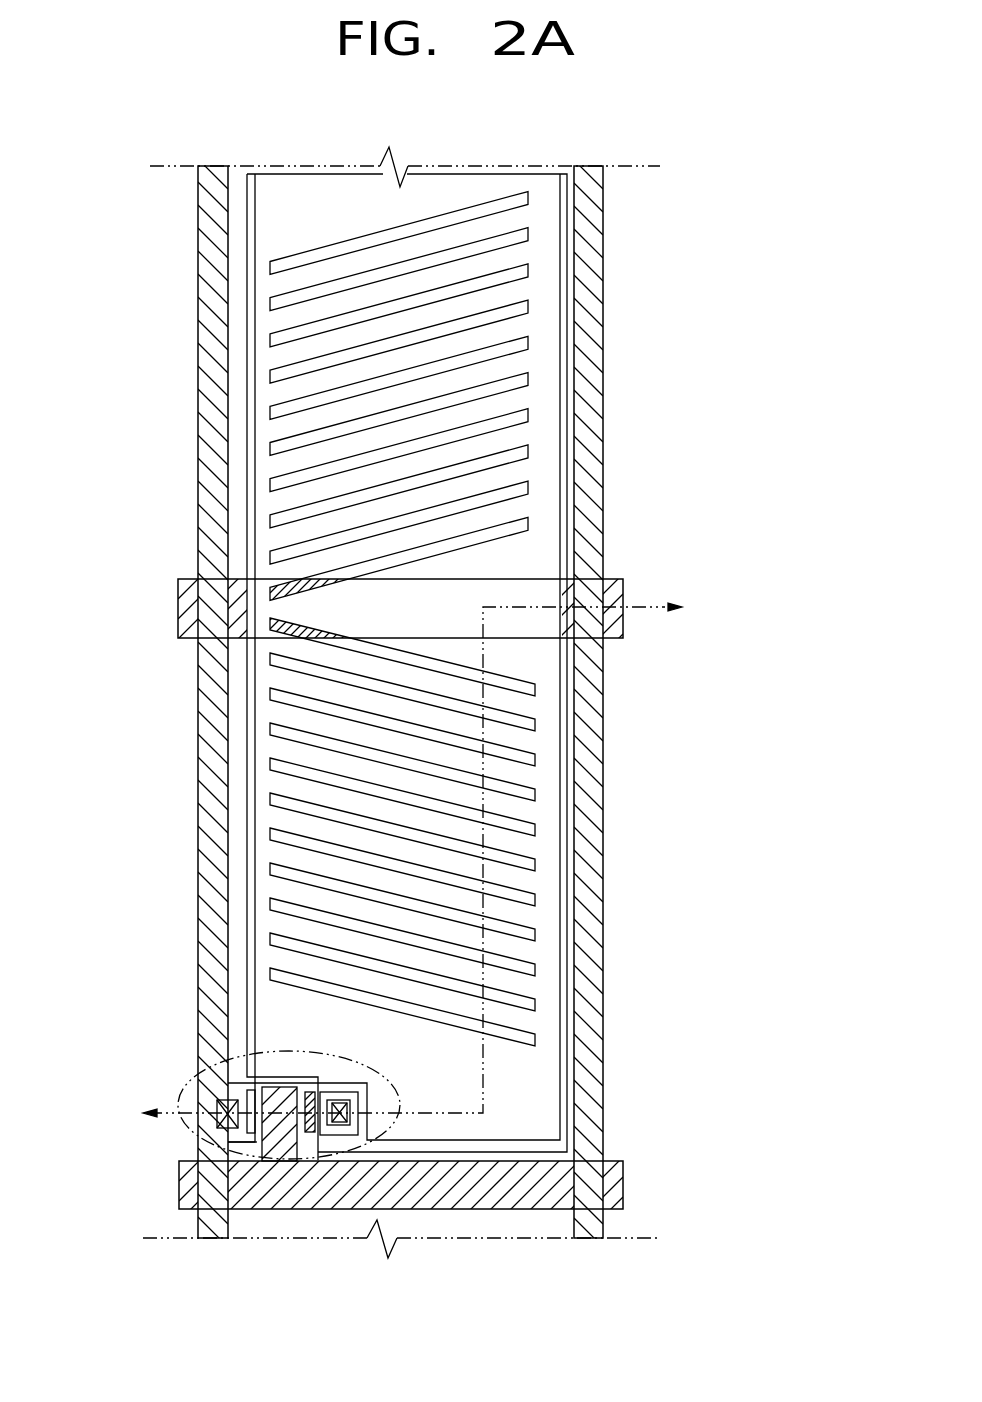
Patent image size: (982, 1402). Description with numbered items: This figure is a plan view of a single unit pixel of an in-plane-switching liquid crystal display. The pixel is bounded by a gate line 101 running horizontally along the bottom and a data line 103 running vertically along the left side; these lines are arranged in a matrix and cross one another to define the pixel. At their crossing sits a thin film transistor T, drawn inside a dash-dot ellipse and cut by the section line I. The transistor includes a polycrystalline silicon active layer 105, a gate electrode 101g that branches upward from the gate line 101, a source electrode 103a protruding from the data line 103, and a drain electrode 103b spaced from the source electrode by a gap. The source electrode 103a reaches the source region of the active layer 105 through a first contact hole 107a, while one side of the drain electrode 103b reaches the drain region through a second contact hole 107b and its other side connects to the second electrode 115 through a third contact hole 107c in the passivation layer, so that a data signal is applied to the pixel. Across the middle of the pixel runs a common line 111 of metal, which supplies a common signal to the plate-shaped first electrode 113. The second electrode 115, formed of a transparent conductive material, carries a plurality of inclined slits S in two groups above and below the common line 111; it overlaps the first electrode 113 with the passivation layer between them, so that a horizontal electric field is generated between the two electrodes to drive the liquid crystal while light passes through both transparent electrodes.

The gate line 101 is at (562, 1209).
The gate electrode 101g is at (282, 1173).
The data line 103 is at (215, 344).
The source electrode 103a is at (243, 1160).
The drain electrode 103b is at (313, 1150).
The active layer 105 is at (243, 1153).
The first contact hole 107a is at (222, 1118).
The second contact hole 107b is at (347, 1128).
The third contact hole 107c is at (352, 1118).
The common line 111 is at (577, 575).
The first electrode 113 is at (565, 1061).
The second electrode 115 is at (540, 1149).
The slits S is at (515, 720).
The thin film transistor T is at (180, 1089).
The section line I- I is at (406, 861).